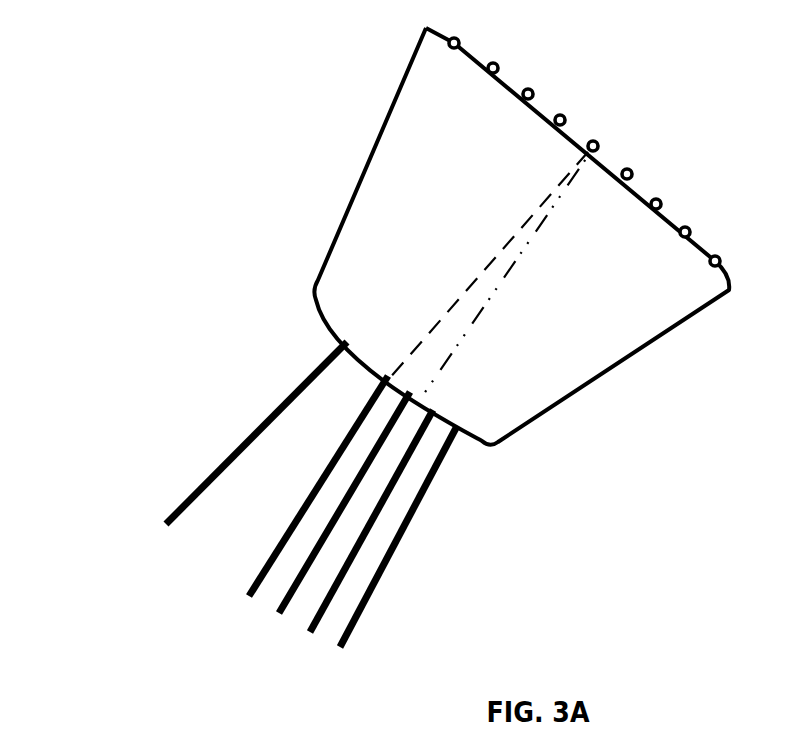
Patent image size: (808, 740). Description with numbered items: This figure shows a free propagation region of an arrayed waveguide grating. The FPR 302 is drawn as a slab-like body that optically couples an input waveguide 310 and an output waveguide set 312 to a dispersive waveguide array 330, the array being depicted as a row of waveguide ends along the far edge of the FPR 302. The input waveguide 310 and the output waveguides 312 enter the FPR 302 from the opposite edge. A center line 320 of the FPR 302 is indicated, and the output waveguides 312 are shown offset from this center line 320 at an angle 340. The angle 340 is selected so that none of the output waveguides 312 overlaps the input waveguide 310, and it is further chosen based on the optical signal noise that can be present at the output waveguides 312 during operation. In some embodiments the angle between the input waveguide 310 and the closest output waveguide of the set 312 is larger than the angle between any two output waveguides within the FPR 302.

The free propagation region 302 is at (347, 207).
The input waveguide 310 is at (205, 480).
The output waveguide set 312 is at (268, 570).
The center line 320 is at (515, 232).
The dispersive waveguide array 330 is at (458, 37).
The angle 340 is at (480, 282).